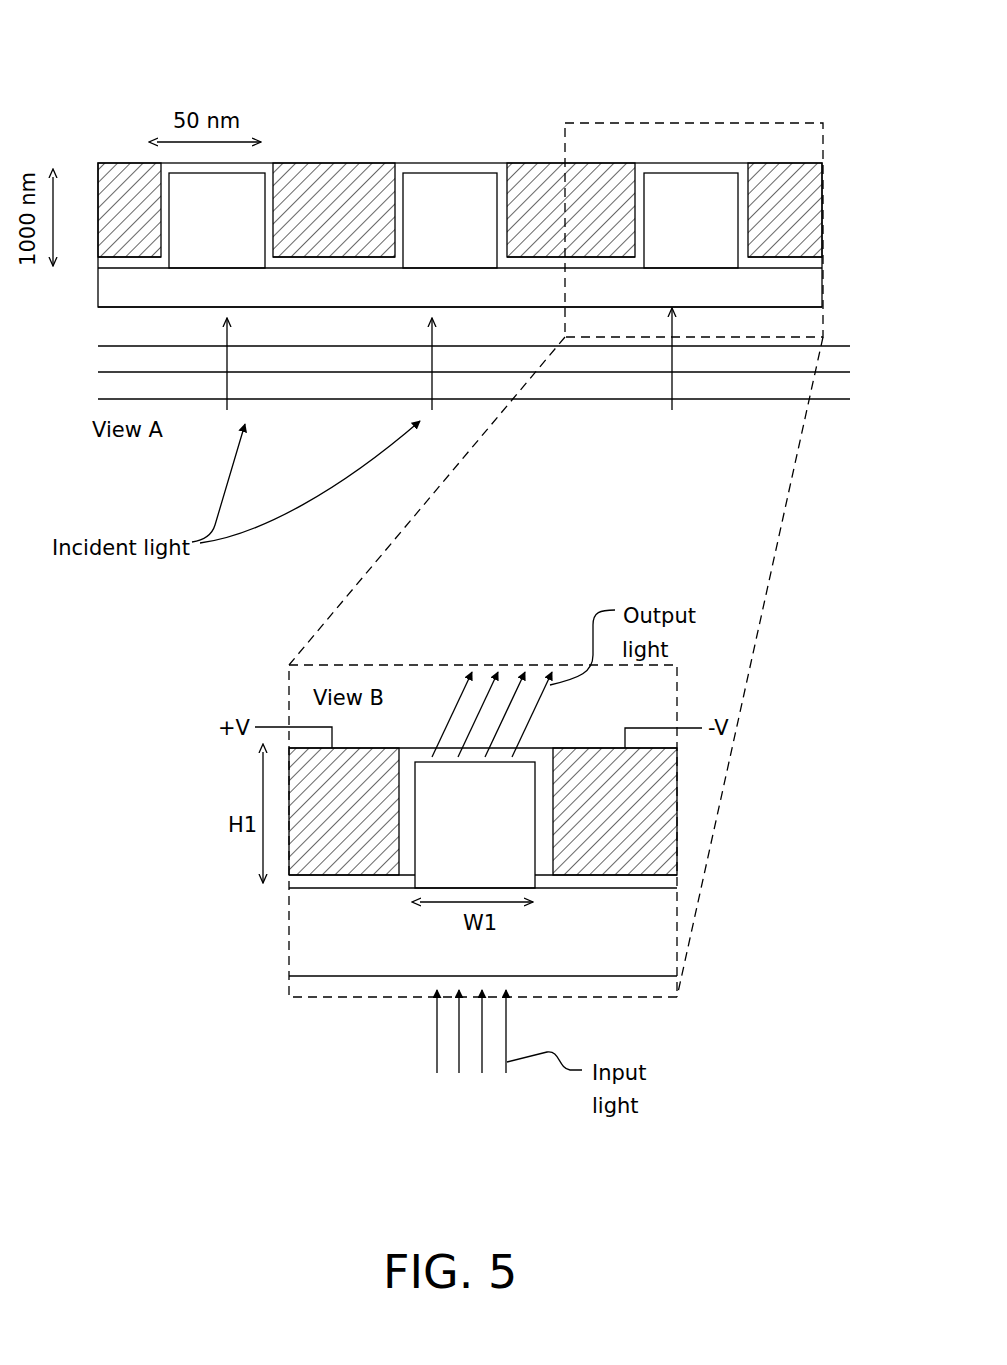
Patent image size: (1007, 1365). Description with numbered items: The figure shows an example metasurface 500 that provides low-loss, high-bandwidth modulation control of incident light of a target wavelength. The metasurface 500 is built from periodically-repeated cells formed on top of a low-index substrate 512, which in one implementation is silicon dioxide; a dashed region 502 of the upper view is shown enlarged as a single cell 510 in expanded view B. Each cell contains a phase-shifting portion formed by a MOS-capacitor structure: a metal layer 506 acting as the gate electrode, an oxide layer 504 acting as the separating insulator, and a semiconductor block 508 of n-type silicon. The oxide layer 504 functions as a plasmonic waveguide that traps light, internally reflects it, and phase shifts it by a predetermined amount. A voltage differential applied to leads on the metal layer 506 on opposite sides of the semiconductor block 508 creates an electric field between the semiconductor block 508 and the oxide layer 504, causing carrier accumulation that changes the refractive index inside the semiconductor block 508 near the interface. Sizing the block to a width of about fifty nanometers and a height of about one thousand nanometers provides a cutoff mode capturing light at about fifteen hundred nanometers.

The metasurface 500 is at (140, 58).
The enlarged region of the device 502 is at (766, 80).
The oxide layer 504 is at (815, 260).
The metal layer 506 is at (773, 163).
The semiconductor block 508 is at (470, 201).
The cell 510 is at (170, 776).
The low-index substrate 512 is at (160, 298).